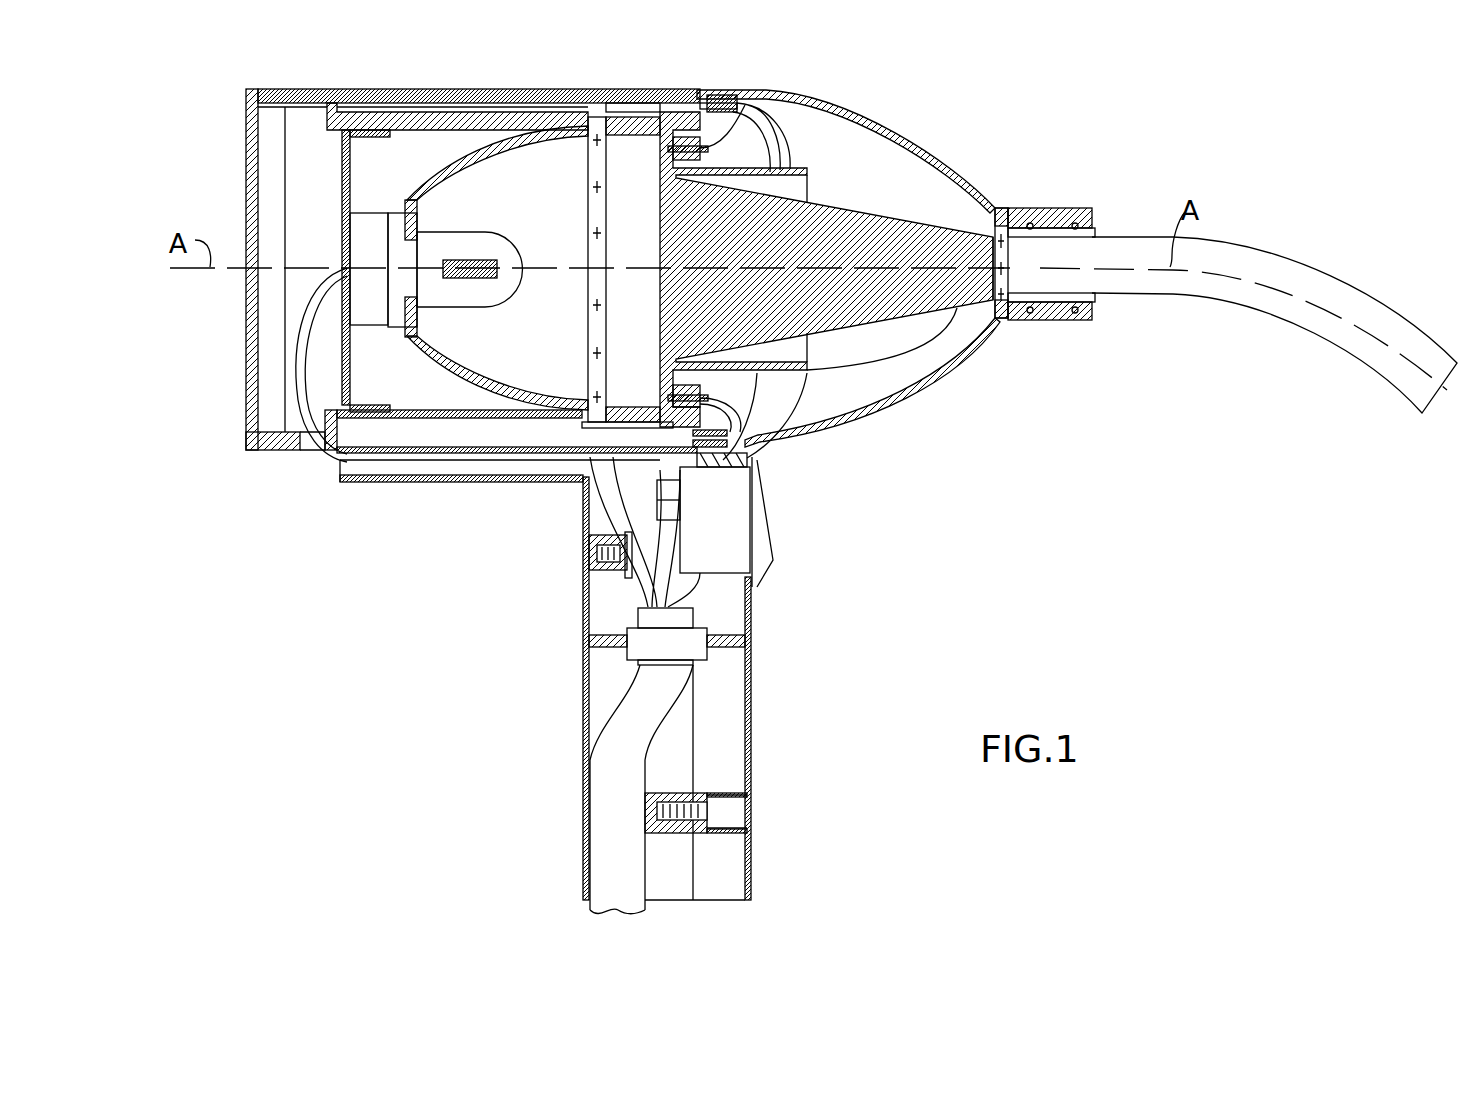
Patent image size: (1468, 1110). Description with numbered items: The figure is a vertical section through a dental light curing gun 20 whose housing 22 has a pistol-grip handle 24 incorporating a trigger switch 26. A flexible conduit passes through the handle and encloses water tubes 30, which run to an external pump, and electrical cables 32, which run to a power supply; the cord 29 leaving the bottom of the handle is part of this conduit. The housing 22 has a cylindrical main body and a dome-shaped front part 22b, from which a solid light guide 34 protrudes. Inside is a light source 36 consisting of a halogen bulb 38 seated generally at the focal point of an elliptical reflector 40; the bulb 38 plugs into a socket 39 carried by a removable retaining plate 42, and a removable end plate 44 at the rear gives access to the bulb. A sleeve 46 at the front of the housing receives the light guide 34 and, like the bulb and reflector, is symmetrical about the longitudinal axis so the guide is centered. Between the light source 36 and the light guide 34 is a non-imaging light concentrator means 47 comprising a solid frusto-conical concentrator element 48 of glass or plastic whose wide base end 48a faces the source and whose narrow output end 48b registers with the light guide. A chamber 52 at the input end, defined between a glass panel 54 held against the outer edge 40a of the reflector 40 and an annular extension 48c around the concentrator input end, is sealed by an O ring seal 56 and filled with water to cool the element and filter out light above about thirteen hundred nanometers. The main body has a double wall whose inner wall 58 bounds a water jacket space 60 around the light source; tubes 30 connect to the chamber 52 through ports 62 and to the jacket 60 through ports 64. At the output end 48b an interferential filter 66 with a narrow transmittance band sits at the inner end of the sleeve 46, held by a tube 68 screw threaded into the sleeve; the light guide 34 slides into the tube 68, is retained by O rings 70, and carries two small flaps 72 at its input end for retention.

The curing light gun 20 is at (236, 318).
The housing 22 is at (240, 453).
The dome-shaped front part 22b is at (907, 397).
The handle 24 is at (572, 762).
The trigger switch 26 is at (720, 508).
The power cord 29 is at (617, 846).
The tubes 30 is at (650, 598).
The electrical cables 32 is at (633, 586).
The solid light guide 34 is at (1303, 293).
The light source 36 is at (428, 385).
The halogen bulb 38 is at (410, 257).
The socket 39 is at (360, 230).
The elliptical reflector 40 is at (488, 393).
The outer edge of reflector 40a is at (598, 117).
The removable retaining plate 42 is at (342, 175).
The removable end plate 44 is at (247, 205).
The sleeve 46 is at (1007, 208).
The non-imaging light concentrator means 47 is at (950, 367).
The concentrator element 48 is at (920, 245).
The base end of concentrator element 48a is at (585, 275).
The output end of concentrator element 48b is at (1007, 322).
The annular extension 48c is at (605, 140).
The chamber 52 is at (598, 272).
The glass panel 54 is at (590, 250).
The O ring seal 56 is at (601, 117).
The inner wall 58 is at (470, 118).
The water jacket space 60 is at (400, 104).
The ports 62 is at (668, 150).
The ports 64 is at (700, 103).
The interferential filter 66 is at (1007, 270).
The tube 68 is at (1094, 298).
The O rings 70 is at (1073, 207).
The flaps 72 is at (1098, 228).